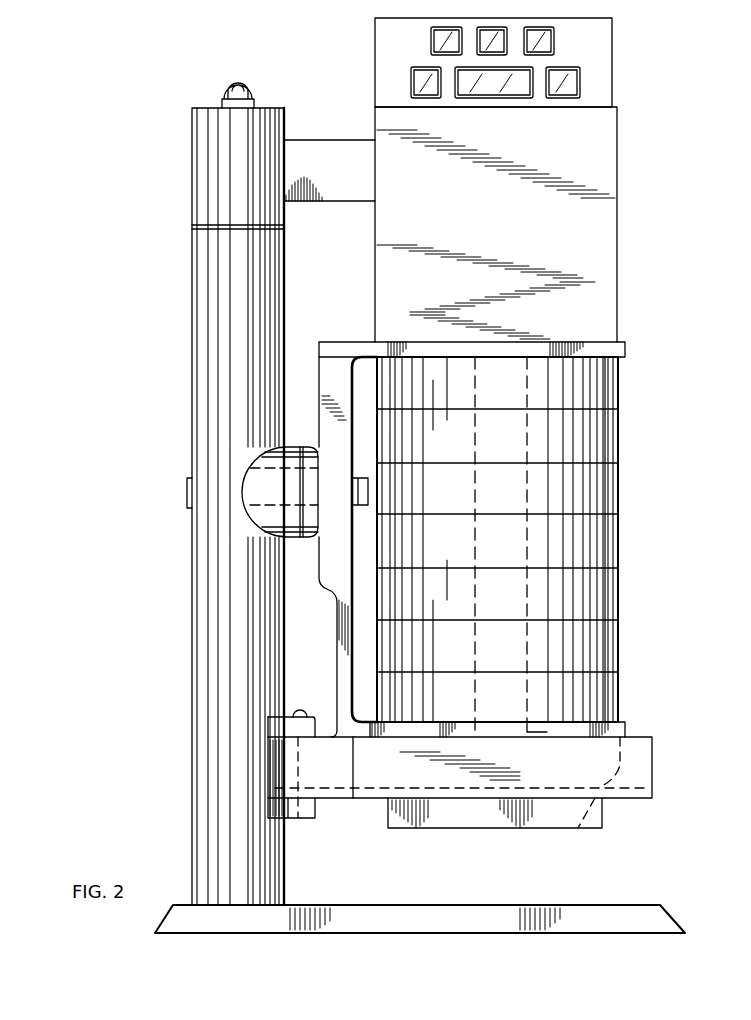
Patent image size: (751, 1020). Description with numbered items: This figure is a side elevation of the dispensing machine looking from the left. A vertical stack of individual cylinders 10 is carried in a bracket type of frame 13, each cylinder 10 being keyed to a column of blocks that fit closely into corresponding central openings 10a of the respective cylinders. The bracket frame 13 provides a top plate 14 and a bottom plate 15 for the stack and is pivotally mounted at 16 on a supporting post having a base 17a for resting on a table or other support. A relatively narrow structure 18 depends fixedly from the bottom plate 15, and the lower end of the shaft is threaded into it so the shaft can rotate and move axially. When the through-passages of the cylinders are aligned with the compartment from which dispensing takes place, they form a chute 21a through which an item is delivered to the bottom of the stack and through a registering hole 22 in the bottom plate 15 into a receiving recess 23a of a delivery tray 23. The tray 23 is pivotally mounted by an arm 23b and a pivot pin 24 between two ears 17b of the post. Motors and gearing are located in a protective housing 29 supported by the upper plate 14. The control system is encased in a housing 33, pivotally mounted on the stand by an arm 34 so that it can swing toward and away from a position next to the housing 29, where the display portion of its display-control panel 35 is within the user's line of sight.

The cylinder 10 is at (618, 488).
The opening 10a is at (612, 388).
The bracket type of frame 13 is at (348, 338).
The top plate 14 is at (625, 352).
The bottom plate 15 is at (625, 730).
The pivot mounting 16 is at (187, 490).
The base 17a is at (660, 905).
The ears 17b is at (280, 727).
The relatively narrow structure 18 is at (602, 822).
The chute 21a is at (527, 430).
The registering hole 22 is at (547, 731).
The delivery tray 23 is at (652, 790).
The receiving recess 23a is at (620, 755).
The arm 23b is at (332, 790).
The pivot pin 24 is at (300, 709).
The protective housing 29 is at (617, 166).
The housing 33 is at (612, 30).
The arm 34 is at (318, 140).
The display-control panel 35 is at (598, 56).